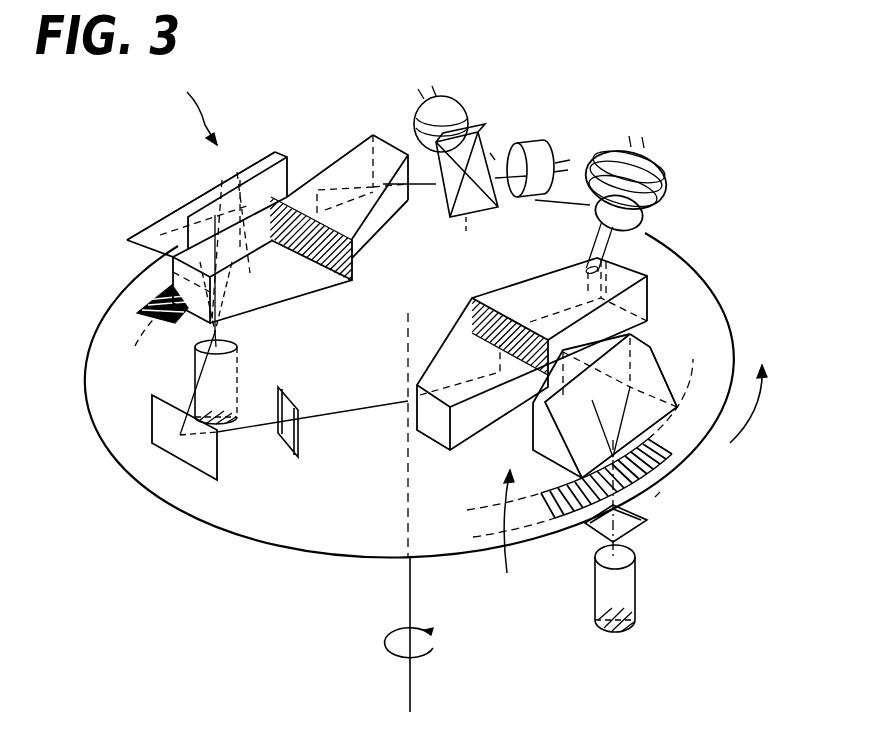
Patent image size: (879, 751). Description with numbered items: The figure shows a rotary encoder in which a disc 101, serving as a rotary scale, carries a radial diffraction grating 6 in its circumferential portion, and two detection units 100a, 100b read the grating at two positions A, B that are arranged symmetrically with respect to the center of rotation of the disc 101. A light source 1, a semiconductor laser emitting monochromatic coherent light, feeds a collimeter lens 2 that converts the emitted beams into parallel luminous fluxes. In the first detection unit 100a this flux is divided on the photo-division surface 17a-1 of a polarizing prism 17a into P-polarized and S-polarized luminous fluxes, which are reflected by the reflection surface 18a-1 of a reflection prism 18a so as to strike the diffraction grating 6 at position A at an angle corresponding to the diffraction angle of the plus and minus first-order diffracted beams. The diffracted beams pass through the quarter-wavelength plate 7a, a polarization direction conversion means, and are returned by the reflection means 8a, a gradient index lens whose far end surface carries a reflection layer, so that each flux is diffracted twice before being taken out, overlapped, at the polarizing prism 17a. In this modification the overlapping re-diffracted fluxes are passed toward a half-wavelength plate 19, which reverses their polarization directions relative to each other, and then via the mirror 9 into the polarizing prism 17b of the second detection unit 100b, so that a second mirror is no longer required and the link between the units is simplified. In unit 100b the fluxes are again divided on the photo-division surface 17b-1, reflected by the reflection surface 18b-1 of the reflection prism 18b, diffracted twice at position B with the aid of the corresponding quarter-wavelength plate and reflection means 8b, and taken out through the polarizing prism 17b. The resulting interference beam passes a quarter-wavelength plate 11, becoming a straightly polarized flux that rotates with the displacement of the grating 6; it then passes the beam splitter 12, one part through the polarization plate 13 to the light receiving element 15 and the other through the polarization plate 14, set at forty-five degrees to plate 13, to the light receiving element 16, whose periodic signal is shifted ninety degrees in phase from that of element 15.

The light source 1 is at (665, 187).
The collimeter lens 2 is at (620, 250).
The radial diffraction grating 6 is at (666, 450).
The polarization direction conversion means 7a is at (647, 520).
The reflection means 8a is at (635, 590).
The reflection means 8b is at (237, 395).
The mirror 9 is at (200, 458).
The ¼ wavelength plate 11 is at (447, 205).
The beam splitter 12 is at (470, 220).
The polarization plate 13 is at (490, 153).
The polarization plate 14 is at (487, 127).
The light receiving element 15 is at (543, 150).
The light receiving element 16 is at (470, 107).
The polarizing prism 17a is at (562, 345).
The photo-division surface 17a-1 is at (493, 290).
The polarizing prism 17b is at (280, 234).
The photo-division surface 17b-1 is at (343, 283).
The reflection prism 18a is at (633, 398).
The reflection surface 18a-1 is at (655, 372).
The reflection prism 18b is at (201, 207).
The reflection surface 18b-1 is at (147, 227).
The ½ wavelength plate 19 is at (300, 442).
The detection unit 100a is at (510, 539).
The detection unit 100b is at (187, 105).
The disc 101 is at (347, 543).
The position A is at (660, 492).
The position B is at (140, 252).